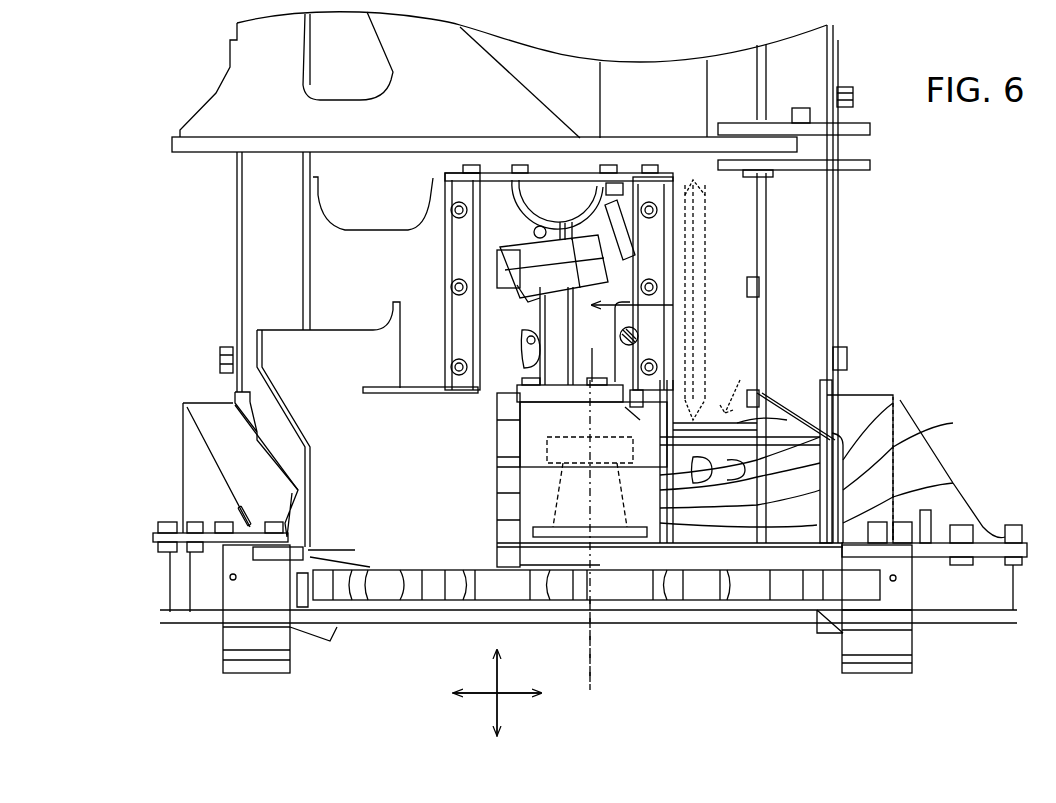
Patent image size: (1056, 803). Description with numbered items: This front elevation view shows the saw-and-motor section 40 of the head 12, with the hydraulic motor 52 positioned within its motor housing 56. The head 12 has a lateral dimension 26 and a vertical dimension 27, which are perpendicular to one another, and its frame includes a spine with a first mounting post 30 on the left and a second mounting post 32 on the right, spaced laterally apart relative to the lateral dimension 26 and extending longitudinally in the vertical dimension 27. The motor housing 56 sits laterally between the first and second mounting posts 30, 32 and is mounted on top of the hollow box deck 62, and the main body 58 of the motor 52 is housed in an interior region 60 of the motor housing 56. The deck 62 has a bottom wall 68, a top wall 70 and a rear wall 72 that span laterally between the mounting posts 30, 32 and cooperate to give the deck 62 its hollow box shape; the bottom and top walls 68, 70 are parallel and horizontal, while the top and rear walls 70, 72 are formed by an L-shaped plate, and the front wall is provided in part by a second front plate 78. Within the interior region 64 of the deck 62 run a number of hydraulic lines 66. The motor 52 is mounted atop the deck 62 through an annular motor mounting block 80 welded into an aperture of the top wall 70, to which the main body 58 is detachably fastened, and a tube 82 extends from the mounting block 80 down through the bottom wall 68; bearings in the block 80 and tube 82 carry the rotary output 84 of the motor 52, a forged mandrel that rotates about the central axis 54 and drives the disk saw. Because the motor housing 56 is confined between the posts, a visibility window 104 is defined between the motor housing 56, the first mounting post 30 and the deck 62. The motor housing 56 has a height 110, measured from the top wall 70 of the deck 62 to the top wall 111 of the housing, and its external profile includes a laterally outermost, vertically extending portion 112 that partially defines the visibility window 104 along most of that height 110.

The head 12 is at (205, 90).
The lateral dimension 26 is at (518, 688).
The vertical dimension 27 is at (502, 710).
The first mounting post 30 is at (800, 237).
The second mounting post 32 is at (268, 280).
The saw-and-motor section 40 is at (197, 487).
The hydraulic motor 52 is at (690, 305).
The central axis 54 is at (603, 642).
The motor housing 56 is at (690, 245).
The main body 58 is at (533, 368).
The interior region 60 is at (517, 200).
The hollow box deck 62 is at (760, 350).
The interior region 64 is at (827, 417).
The hydraulic lines 66 is at (843, 470).
The bottom wall 68 is at (843, 533).
The top wall 70 is at (820, 363).
The rear wall 72 is at (887, 398).
The second front plate 78 is at (390, 446).
The motor mounting block 80 is at (497, 437).
The tube 82 is at (497, 483).
The rotary output 84 is at (497, 533).
The visibility window 104 is at (683, 373).
The height 110 is at (707, 208).
The top wall 111 is at (570, 185).
The portion 112 is at (683, 333).